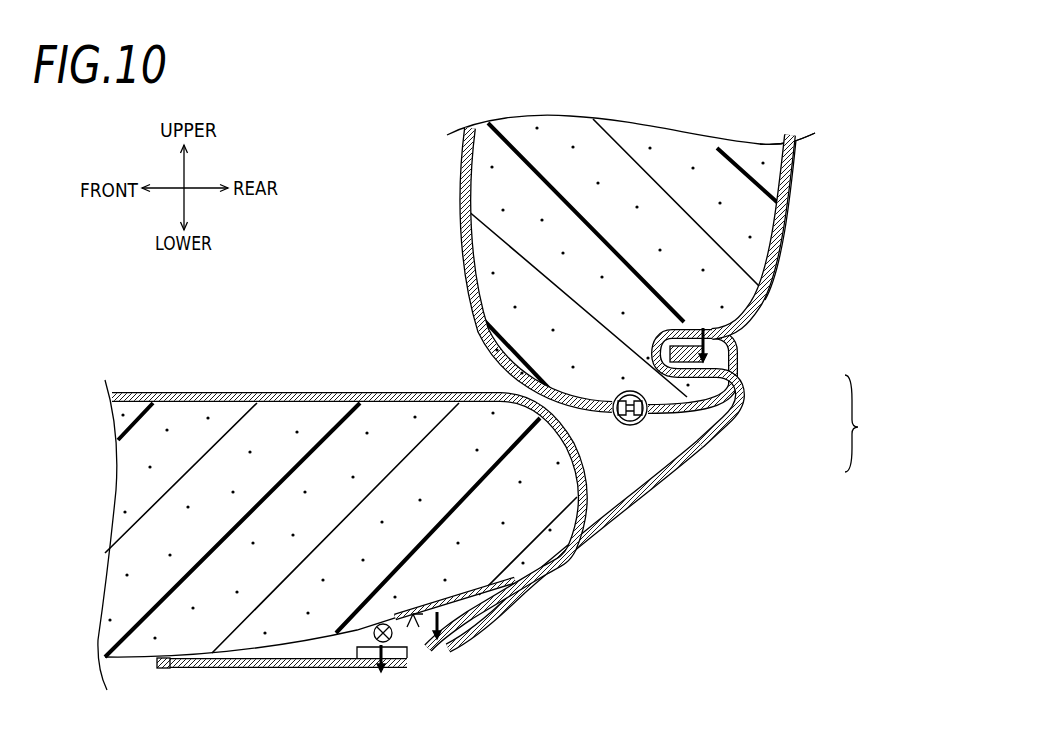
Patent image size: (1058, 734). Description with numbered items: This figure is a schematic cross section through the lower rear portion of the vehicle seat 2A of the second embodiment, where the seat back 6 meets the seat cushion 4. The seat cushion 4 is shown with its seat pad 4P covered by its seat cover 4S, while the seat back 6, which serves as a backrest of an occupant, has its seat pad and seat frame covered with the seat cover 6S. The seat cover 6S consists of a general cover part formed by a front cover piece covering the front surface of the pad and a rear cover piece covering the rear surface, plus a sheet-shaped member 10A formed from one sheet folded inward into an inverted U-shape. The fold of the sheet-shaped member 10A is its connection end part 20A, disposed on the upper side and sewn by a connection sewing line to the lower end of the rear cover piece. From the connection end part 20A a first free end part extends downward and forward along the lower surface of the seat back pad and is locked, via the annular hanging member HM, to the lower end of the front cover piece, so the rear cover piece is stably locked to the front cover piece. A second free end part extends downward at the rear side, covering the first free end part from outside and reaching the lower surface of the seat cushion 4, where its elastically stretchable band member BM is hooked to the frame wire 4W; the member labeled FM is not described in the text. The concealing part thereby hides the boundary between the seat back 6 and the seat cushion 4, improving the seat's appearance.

The seat back 6 is at (443, 164).
The annular hanging member HM is at (622, 393).
The seat cover 6S is at (798, 172).
The vehicle seat 2A is at (838, 198).
The connection end part 20A is at (741, 389).
The sheet-shaped member 10A is at (874, 423).
The seat cushion 4 is at (148, 386).
The seat cover 4S is at (210, 390).
The seat pad 4P is at (133, 593).
The band member BM is at (290, 668).
The frame wire 4W is at (368, 670).
The frame member FM is at (434, 642).